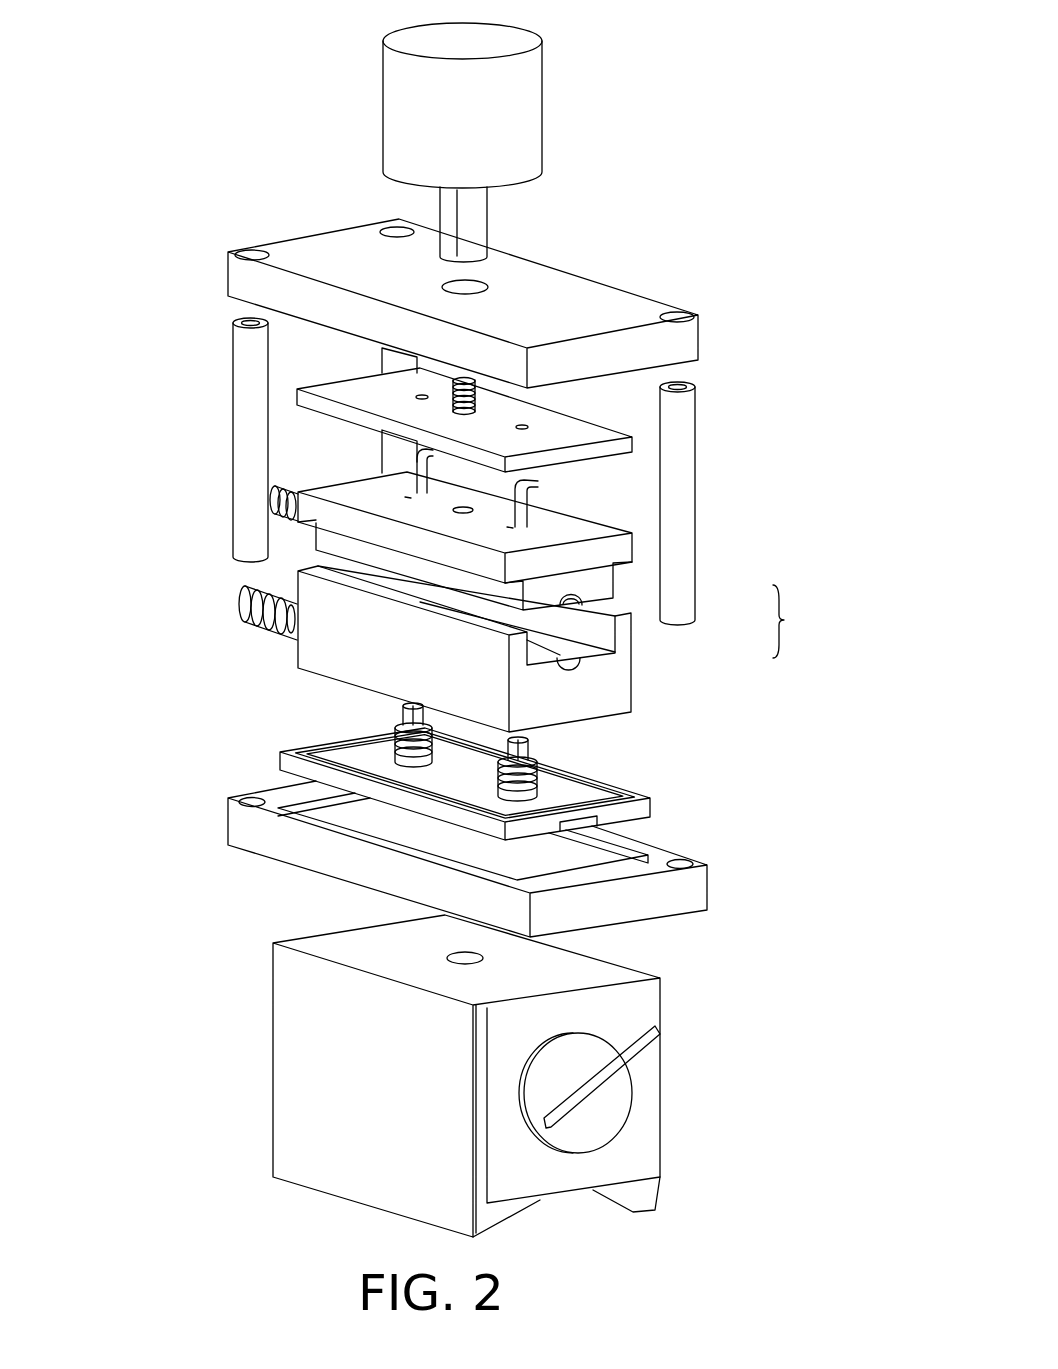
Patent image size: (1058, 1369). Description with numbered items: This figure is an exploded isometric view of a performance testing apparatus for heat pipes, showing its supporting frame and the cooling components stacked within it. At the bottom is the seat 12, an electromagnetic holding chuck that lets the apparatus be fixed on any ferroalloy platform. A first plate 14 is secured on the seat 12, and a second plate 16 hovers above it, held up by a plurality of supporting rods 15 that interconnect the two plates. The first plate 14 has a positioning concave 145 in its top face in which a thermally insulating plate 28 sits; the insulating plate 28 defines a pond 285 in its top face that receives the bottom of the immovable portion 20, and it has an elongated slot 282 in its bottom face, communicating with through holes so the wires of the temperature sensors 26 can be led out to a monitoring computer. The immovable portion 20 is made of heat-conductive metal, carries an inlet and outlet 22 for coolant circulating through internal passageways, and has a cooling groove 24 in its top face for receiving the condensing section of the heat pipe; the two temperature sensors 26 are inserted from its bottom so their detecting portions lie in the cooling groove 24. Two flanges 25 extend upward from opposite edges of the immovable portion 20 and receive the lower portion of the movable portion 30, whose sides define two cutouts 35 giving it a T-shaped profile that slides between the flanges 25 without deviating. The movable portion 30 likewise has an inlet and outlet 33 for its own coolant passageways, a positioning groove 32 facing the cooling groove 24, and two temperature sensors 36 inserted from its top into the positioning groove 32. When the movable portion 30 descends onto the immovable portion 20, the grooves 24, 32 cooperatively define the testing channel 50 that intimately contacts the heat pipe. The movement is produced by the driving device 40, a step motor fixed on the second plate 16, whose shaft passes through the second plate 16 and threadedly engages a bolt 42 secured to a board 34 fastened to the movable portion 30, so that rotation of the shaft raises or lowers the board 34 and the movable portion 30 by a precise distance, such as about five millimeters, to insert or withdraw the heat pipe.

The driving device 40 is at (414, 128).
The second plate 16 is at (538, 295).
The bolt 42 is at (268, 321).
The board 34 is at (315, 405).
The supporting rods 15 is at (680, 408).
The temperature sensors 36 is at (545, 486).
The inlet and outlet 33 is at (278, 488).
The movable portion 30 is at (595, 530).
The cutouts 35 is at (622, 577).
The inlet and outlet 22 is at (242, 606).
The positioning groove 32 is at (627, 612).
The testing channel 50 is at (799, 621).
The immovable portion 20 is at (322, 642).
The cooling groove 24 is at (515, 658).
The pond 285 is at (358, 760).
The flanges 25 is at (515, 655).
The thermally insulating plate 28 is at (296, 768).
The temperature sensors 26 is at (541, 764).
The elongated slot 282 is at (597, 820).
The first plate 14 is at (256, 842).
The positioning concave 145 is at (575, 850).
The seat 12 is at (302, 1010).